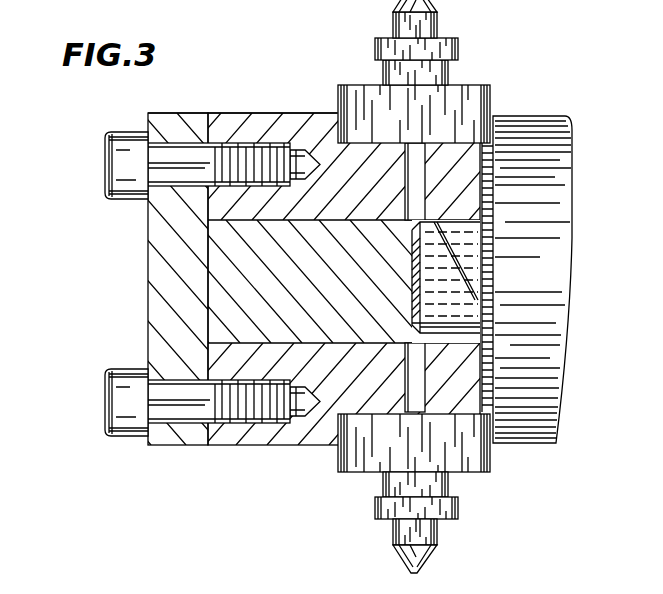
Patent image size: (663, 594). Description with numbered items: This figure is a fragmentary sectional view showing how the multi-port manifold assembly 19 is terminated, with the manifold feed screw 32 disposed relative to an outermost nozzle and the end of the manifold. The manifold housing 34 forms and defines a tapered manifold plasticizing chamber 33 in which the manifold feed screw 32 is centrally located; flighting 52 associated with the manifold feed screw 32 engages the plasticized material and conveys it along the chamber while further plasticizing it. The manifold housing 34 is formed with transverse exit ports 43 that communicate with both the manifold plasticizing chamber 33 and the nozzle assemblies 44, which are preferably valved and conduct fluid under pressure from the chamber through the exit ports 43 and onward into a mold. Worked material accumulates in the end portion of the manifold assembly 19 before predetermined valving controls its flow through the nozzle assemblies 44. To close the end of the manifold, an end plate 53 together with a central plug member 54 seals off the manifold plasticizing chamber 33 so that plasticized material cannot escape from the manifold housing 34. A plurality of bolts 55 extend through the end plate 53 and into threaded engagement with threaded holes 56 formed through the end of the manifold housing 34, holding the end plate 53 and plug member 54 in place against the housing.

The multi-port manifold assembly 19 is at (333, 61).
The manifold feed screw 32 is at (462, 248).
The manifold plasticizing chamber 33 is at (465, 345).
The manifold housing 34 is at (543, 133).
The transverse exit ports 43 is at (420, 163).
The nozzle assembly 44 is at (446, 26).
The flighting 52 is at (482, 290).
The end plate 53 is at (160, 283).
The central plug member 54 is at (228, 323).
The bolts 55 is at (110, 134).
The threaded holes 56 is at (245, 143).